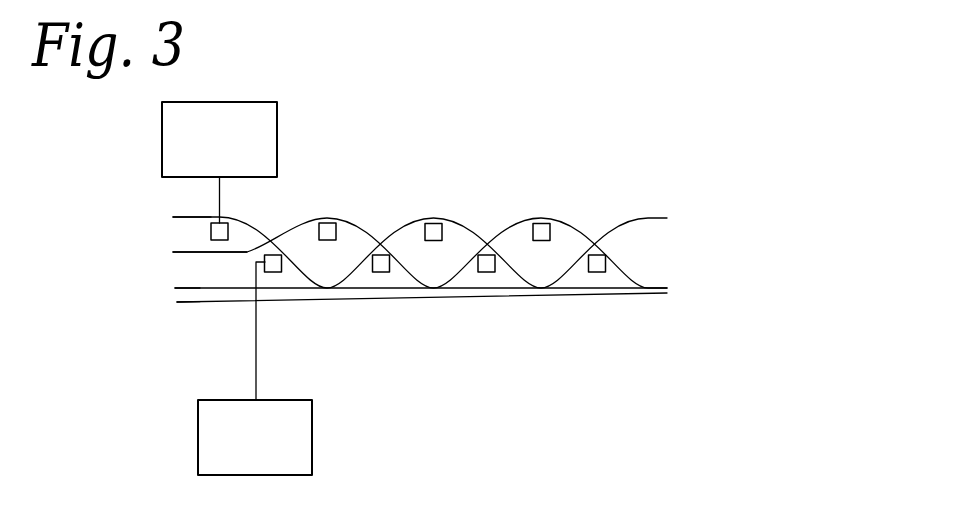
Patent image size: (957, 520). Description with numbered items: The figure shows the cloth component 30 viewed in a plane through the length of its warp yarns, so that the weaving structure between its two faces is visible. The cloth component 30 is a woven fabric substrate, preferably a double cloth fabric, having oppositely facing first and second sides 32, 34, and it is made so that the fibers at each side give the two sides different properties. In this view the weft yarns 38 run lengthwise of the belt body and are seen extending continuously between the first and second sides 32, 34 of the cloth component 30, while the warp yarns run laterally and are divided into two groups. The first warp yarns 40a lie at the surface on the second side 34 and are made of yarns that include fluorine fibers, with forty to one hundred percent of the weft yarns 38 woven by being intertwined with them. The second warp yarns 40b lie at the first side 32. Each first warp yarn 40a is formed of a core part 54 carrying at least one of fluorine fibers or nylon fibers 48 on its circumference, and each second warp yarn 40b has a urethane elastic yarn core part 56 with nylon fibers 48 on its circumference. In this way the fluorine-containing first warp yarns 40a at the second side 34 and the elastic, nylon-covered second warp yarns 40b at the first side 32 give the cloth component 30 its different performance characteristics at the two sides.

The cloth component 30 is at (684, 222).
The first side 32 is at (659, 304).
The second side 34 is at (604, 194).
The weft yarns 38 is at (173, 252).
The first warp yarns 40a is at (533, 218).
The second warp yarns 40b is at (593, 272).
The nylon fibers 48 is at (204, 167).
The core part 54 is at (230, 222).
The urethane elastic yarn core part 56 is at (262, 258).